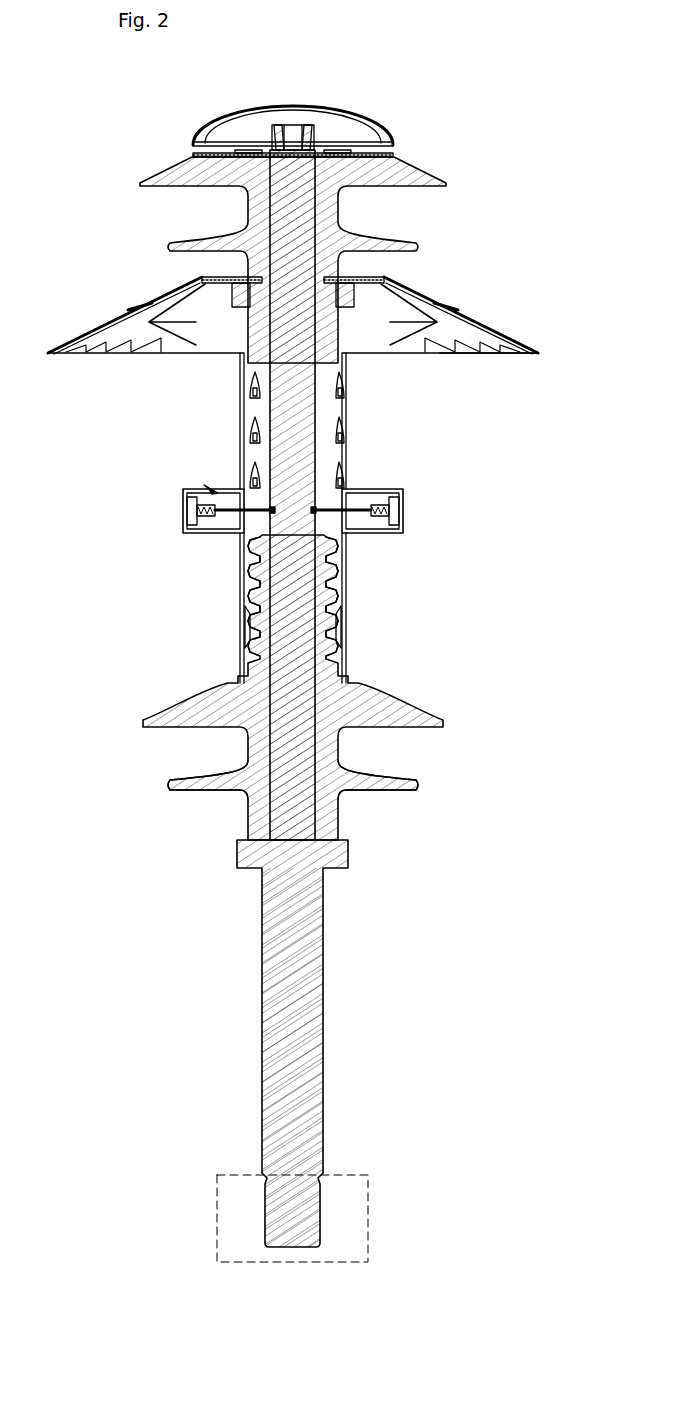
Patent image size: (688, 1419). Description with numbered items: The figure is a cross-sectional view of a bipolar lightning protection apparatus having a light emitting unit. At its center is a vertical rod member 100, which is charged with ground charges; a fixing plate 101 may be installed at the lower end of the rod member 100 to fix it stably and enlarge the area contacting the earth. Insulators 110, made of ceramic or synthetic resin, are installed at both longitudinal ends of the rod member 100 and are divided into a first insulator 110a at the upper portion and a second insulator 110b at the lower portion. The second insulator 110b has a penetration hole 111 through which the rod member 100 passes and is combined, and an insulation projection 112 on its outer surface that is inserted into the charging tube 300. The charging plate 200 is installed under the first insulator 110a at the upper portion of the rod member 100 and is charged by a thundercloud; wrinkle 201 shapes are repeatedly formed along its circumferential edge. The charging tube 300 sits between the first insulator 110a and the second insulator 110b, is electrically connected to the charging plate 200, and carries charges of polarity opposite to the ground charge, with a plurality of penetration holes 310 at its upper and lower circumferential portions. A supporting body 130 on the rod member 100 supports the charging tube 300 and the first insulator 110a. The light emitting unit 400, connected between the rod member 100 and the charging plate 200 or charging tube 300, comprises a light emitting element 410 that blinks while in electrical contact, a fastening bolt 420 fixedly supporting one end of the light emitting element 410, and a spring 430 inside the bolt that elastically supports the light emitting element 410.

The rod member 100 is at (300, 406).
The fixing plate 101 is at (370, 1180).
The insulator 110 is at (344, 702).
The first insulator 110a is at (442, 184).
The second insulator 110b is at (430, 706).
The penetration hole 111 is at (310, 772).
The insulation projection 112 is at (347, 600).
The supporting body 130 is at (372, 277).
The charging plate 200 is at (485, 324).
The wrinkle 201 is at (530, 356).
The charging tube 300 is at (347, 450).
The penetration holes 310 is at (248, 393).
The light emitting unit 400 is at (249, 507).
The light emitting element 410 is at (232, 533).
The fastening bolt 420 is at (185, 512).
The spring 430 is at (193, 533).